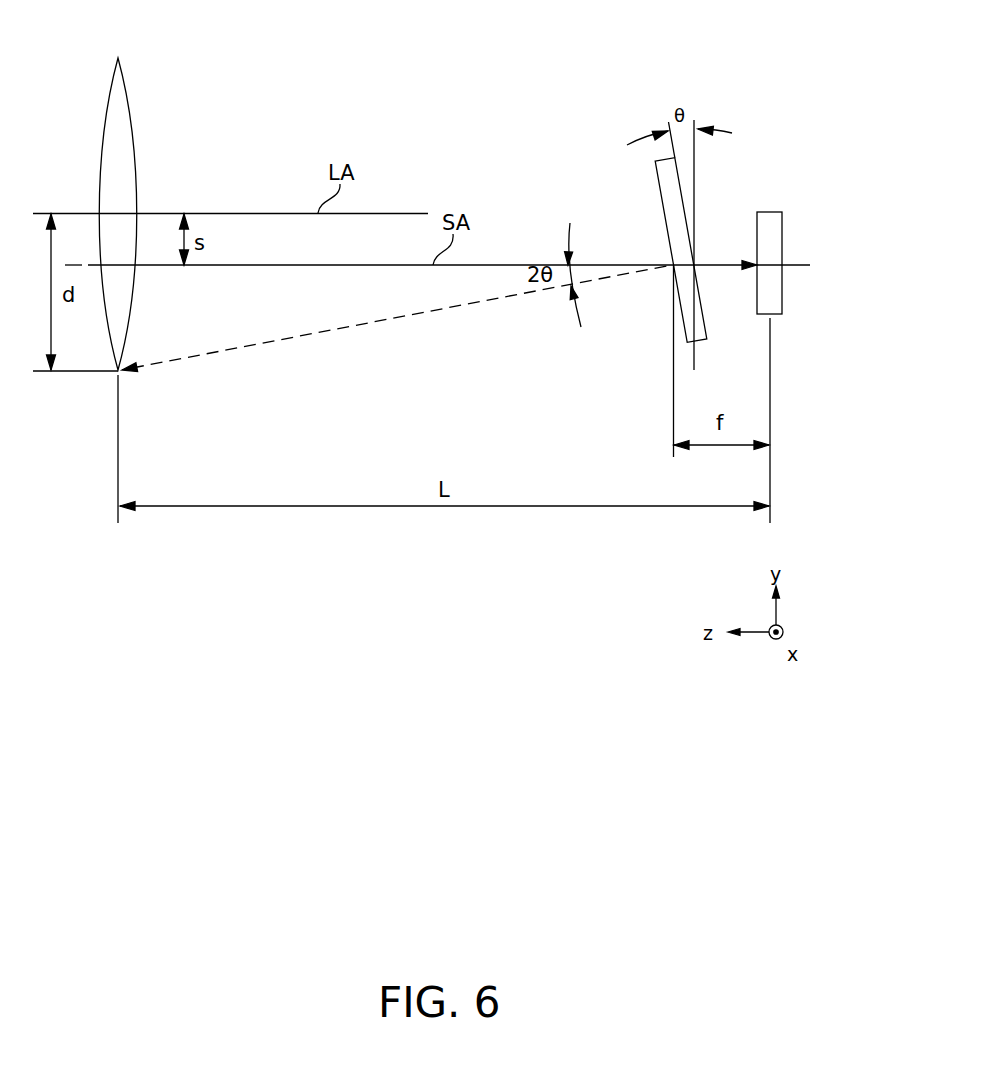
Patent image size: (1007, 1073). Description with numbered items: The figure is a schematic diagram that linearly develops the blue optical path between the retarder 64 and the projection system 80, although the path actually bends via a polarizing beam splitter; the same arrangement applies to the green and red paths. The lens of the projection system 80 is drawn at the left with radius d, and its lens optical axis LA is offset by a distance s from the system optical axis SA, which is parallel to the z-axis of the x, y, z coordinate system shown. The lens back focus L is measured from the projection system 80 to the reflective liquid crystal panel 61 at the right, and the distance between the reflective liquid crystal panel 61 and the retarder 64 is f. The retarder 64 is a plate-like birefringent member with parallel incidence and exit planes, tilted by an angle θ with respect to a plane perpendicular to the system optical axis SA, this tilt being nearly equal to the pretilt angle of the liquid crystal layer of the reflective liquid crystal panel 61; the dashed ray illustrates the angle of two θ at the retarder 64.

The projection system 80 is at (127, 78).
The retarder 64 is at (653, 170).
The reflective liquid crystal panel 61 is at (775, 212).